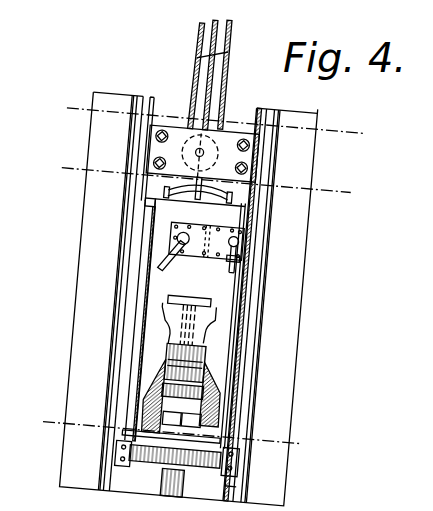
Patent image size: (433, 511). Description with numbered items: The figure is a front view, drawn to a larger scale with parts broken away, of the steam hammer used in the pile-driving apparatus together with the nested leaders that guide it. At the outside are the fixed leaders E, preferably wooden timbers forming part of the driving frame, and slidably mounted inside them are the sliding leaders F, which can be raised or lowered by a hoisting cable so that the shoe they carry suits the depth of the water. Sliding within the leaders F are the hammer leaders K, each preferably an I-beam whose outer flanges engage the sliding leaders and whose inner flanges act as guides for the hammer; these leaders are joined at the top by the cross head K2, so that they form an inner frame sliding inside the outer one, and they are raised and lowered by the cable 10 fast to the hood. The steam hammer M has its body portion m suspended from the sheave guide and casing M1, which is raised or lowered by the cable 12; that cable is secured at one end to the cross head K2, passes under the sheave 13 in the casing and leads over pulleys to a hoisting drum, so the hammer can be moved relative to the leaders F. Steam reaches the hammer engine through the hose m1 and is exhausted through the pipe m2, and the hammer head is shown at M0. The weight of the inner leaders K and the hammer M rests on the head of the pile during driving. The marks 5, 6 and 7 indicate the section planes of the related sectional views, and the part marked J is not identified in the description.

The fixed leaders E is at (80, 247).
The sliding leaders F is at (114, 274).
The hammer leaders K is at (135, 102).
The cross head K2 is at (159, 464).
The steam hammer M is at (237, 304).
The sheave guide and casing M1 is at (246, 152).
The hammer head M0 is at (224, 388).
The body portion m is at (146, 317).
The hose m1 is at (232, 267).
The exhaust pipe m2 is at (158, 274).
The bottom member J is at (252, 483).
The cable 10 is at (183, 22).
The cable 12 is at (207, 50).
The sheave 13 is at (203, 137).
The section line 5- 5 is at (47, 92).
The section line 6- 6 is at (49, 152).
The section line 7- 7 is at (54, 393).